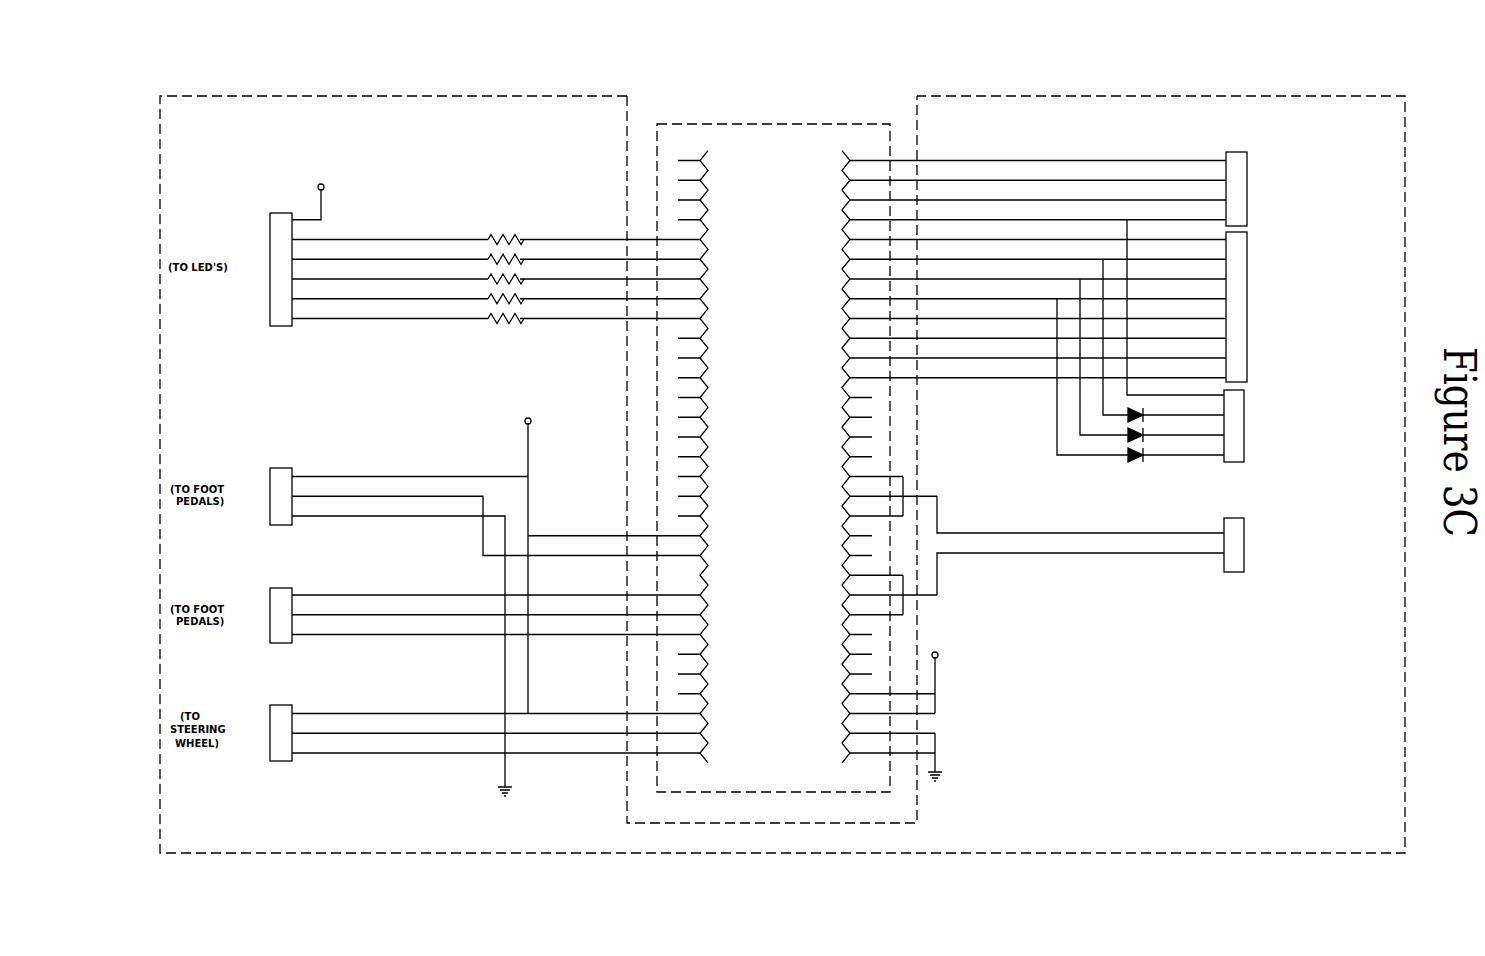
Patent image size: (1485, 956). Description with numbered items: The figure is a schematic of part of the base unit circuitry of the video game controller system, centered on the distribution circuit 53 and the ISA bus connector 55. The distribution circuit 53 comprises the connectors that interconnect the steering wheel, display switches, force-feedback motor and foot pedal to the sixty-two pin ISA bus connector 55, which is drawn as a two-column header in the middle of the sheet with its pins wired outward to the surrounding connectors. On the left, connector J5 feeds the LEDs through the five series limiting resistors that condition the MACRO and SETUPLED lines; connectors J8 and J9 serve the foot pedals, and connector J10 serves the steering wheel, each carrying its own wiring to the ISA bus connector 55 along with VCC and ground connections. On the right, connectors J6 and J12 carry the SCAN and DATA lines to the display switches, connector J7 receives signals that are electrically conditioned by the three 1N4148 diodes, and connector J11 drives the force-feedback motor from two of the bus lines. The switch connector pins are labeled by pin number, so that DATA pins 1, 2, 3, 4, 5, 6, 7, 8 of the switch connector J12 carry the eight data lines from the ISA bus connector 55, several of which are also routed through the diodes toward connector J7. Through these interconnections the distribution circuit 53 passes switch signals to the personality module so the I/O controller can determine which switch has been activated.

The ISA bus connector 55 is at (867, 130).
The distribution circuit 53 is at (1109, 453).
The connector J5 is at (476, 249).
The connector J6 is at (1109, 187).
The connector J7 is at (1211, 348).
The connector J8 is at (475, 600).
The connector J9 is at (475, 613).
The connector J10 is at (473, 731).
The connector J11 is at (1099, 546).
The connector J12 is at (1109, 305).
The J12 pin 1 (DATA1) 1 is at (1038, 234).
The J12 pin 2 (DATA2) 2 is at (1038, 253).
The J12 pin 3 (DATA3) 3 is at (1038, 273).
The J12 pin 4 (DATA4) 4 is at (1038, 293).
The J12 pin 5 (DATA5) 5 is at (1038, 313).
The J12 pin 6 (DATA6) 6 is at (1038, 332).
The J12 pin 7 (DATA7) 7 is at (1038, 352).
The J12 pin 8 (DATA8) 8 is at (1038, 372).